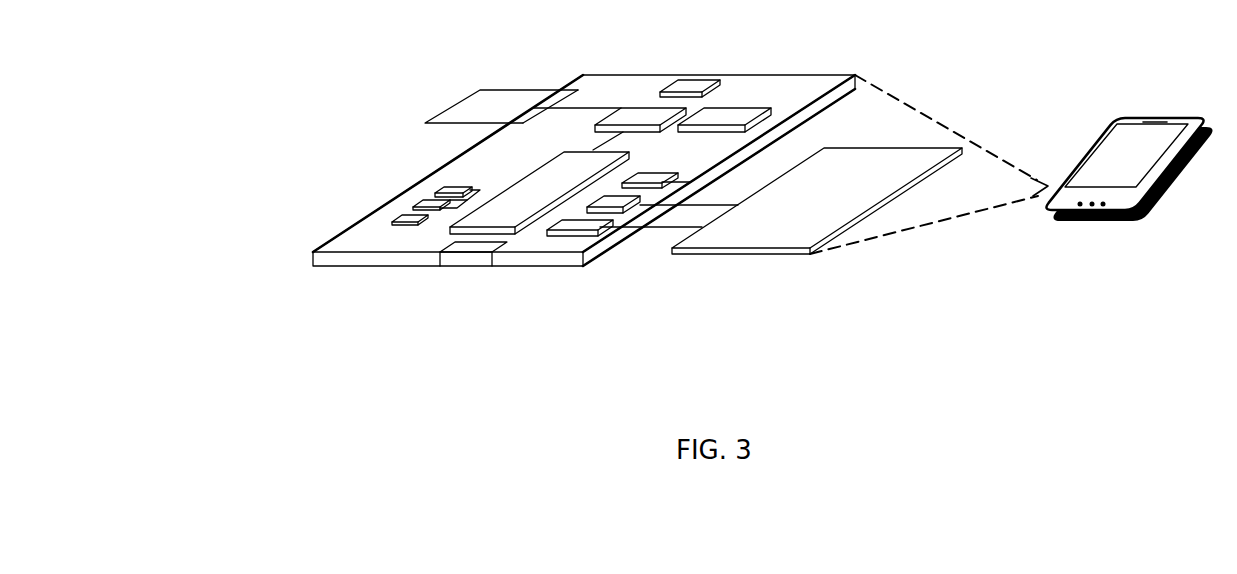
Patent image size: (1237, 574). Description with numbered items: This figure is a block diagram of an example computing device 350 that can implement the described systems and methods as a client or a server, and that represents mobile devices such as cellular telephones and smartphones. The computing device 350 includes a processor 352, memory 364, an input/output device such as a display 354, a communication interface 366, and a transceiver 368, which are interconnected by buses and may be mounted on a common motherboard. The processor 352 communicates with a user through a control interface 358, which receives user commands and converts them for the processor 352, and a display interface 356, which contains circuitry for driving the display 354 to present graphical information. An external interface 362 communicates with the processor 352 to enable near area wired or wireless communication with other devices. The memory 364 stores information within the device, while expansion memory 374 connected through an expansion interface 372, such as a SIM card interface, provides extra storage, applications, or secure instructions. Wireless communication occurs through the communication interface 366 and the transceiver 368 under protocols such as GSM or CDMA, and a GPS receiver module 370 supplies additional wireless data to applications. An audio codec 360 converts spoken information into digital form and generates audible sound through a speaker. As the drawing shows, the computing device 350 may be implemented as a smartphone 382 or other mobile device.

The computing device 350 is at (288, 264).
The processor 352 is at (509, 218).
The display 354 is at (770, 238).
The display interface 356 is at (582, 225).
The control interface 358 is at (623, 202).
The audio codec 360 is at (652, 177).
The external interface 362 is at (470, 250).
The memory 364 is at (413, 208).
The communication interface 366 is at (643, 117).
The transceiver 368 is at (728, 118).
The GPS receiver module 370 is at (698, 84).
The expansion interface 372 is at (552, 88).
The expansion memory 374 is at (472, 88).
The smartphone 382 is at (1051, 216).